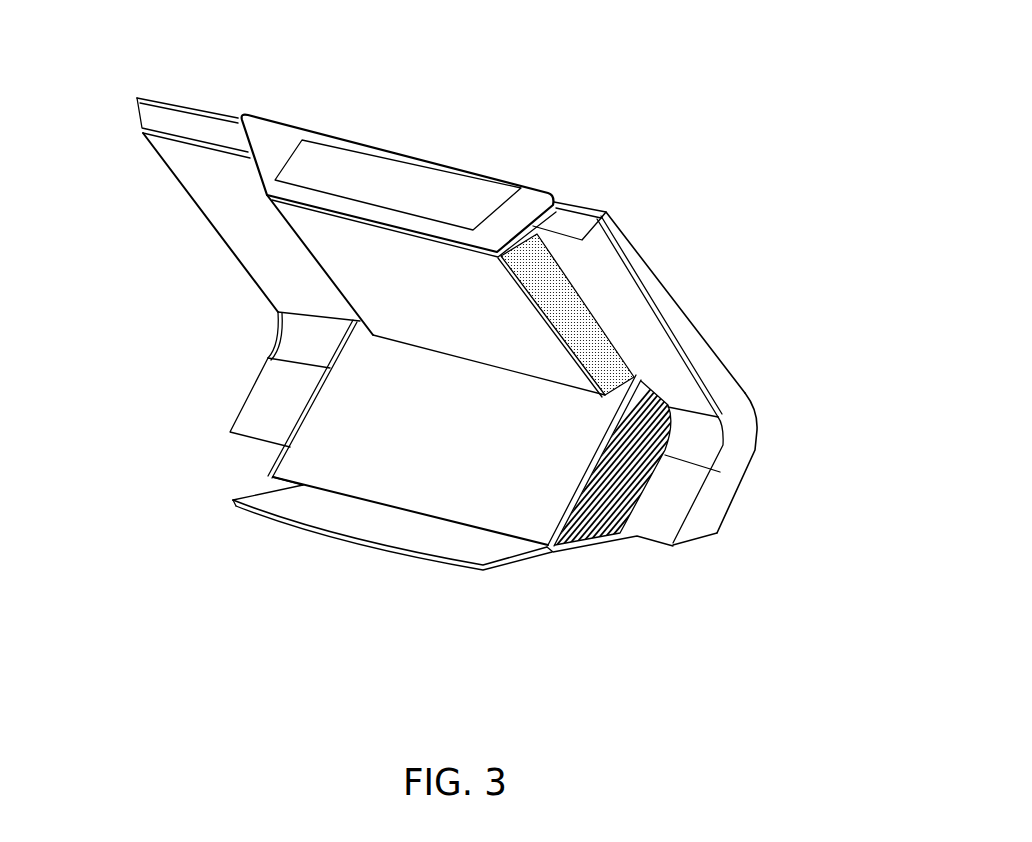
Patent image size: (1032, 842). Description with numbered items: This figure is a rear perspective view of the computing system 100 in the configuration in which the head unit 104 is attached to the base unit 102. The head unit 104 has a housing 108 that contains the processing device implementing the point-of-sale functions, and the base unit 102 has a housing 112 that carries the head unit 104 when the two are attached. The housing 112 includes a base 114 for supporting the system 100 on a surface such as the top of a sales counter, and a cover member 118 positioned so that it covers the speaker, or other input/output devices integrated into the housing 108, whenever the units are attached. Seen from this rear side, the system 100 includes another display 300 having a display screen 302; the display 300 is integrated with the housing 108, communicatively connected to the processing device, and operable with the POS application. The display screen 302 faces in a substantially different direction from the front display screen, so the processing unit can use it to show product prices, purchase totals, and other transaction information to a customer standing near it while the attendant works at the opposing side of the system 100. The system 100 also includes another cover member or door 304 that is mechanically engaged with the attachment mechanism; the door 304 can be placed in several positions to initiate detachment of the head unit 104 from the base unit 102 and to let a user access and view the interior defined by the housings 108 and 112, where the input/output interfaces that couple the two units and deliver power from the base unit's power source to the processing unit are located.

The computing system 100 is at (100, 71).
The base unit 102 is at (242, 409).
The head unit 104 is at (134, 97).
The housing of the head unit 108 is at (607, 211).
The housing of the base unit 112 is at (717, 534).
The base 114 is at (275, 515).
The cover member 118 is at (755, 421).
The display 300 is at (533, 226).
The display screen 302 is at (520, 184).
The cover member or door 304 is at (278, 463).